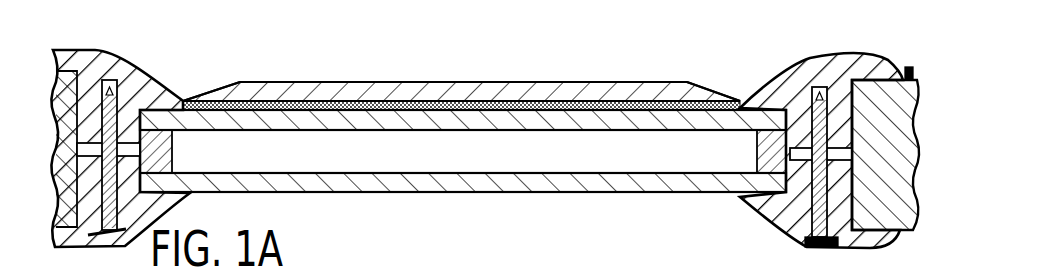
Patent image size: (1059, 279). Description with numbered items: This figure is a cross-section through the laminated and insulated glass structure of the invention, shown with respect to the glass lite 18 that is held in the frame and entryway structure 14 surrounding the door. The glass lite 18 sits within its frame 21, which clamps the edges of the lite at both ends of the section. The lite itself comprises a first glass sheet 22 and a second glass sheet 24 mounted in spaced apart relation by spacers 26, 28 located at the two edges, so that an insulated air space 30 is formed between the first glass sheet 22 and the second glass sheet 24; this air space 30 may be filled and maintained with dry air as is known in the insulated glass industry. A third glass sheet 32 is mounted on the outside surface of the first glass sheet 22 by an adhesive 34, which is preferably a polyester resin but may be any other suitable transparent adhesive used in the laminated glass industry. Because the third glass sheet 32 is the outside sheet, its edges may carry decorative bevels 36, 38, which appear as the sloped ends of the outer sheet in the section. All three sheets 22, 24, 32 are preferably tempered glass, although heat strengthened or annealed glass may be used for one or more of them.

The frame and entryway structure 14 is at (909, 67).
The glass lite 18 is at (463, 127).
The frame 21 is at (123, 56).
The first glass sheet 22 is at (233, 130).
The second glass sheet 24 is at (315, 192).
The spacer 26 is at (174, 153).
The spacer 28 is at (756, 153).
The insulated air space 30 is at (468, 163).
The third glass sheet 32 is at (497, 102).
The adhesive 34 is at (396, 100).
The decorative bevel 36 is at (207, 100).
The decorative bevel 38 is at (711, 99).